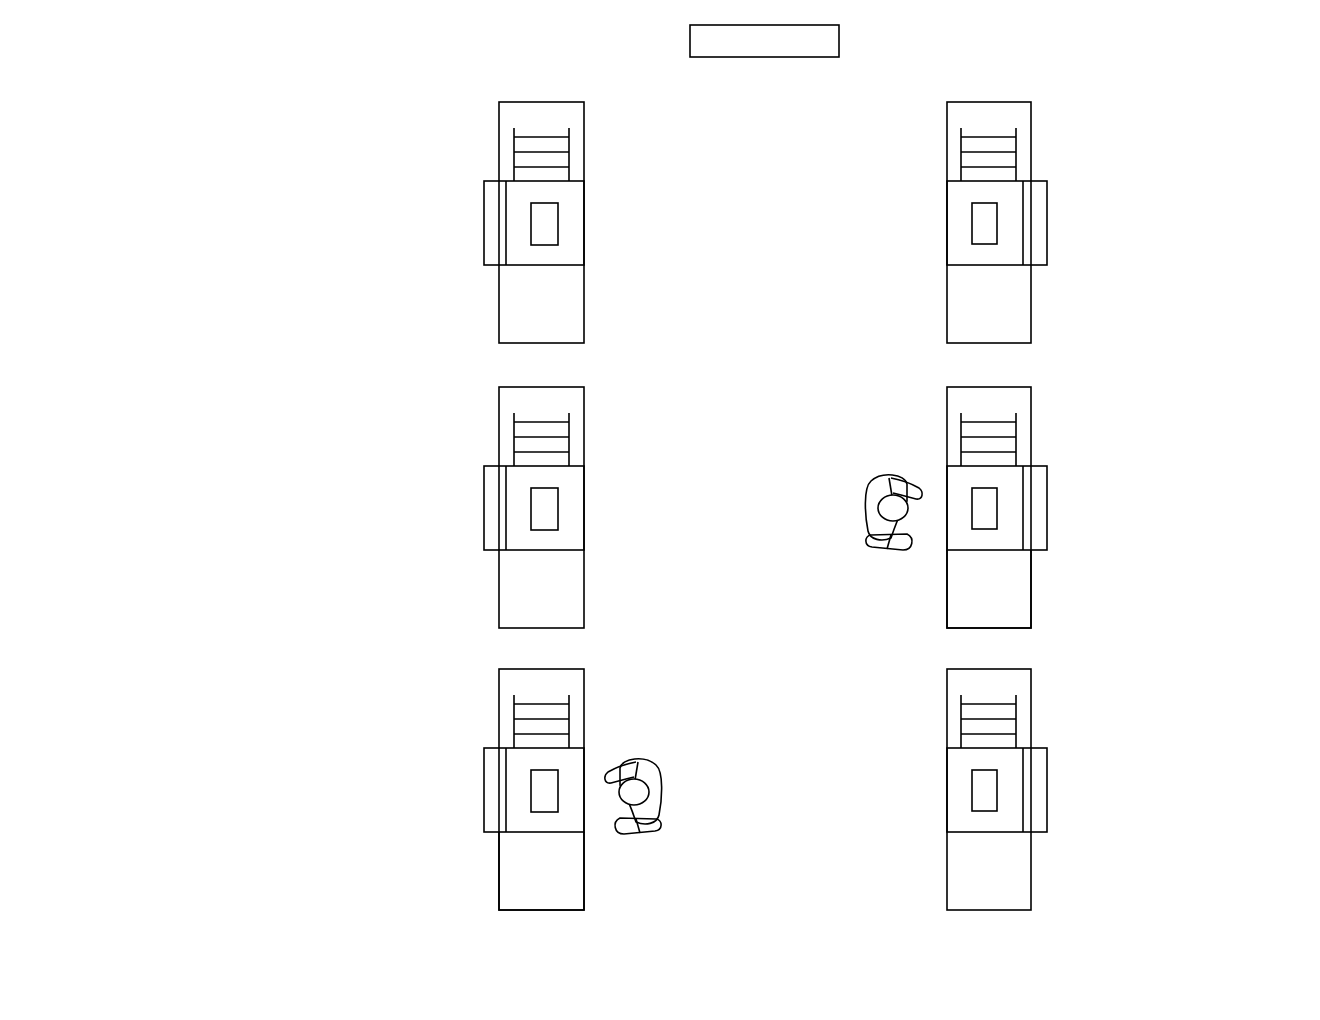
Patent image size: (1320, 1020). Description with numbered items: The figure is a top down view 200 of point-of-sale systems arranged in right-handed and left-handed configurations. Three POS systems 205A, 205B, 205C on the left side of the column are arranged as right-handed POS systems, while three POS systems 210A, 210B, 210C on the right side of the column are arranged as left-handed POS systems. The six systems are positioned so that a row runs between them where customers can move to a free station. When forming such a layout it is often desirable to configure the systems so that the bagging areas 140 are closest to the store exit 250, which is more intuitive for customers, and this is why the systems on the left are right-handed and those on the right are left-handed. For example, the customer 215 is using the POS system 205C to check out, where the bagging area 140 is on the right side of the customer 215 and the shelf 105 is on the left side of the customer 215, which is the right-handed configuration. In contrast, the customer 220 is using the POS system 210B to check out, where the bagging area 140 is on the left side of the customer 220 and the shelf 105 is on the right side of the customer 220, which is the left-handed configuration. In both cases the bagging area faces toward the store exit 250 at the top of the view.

The top down view 200 is at (266, 116).
The POS system 205A is at (468, 227).
The POS system 205B is at (468, 510).
The POS system 205C is at (468, 794).
The POS system 210A is at (1078, 220).
The POS system 210B is at (1078, 503).
The POS system 210C is at (1078, 787).
The bagging area 140 is at (583, 708).
The shelf 105 is at (583, 868).
The customer 215 is at (660, 789).
The customer 220 is at (868, 512).
The store exit 250 is at (839, 38).